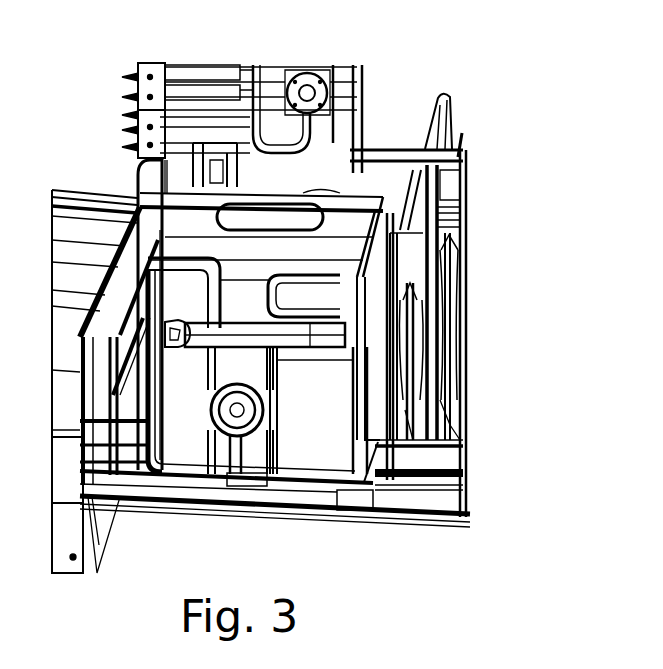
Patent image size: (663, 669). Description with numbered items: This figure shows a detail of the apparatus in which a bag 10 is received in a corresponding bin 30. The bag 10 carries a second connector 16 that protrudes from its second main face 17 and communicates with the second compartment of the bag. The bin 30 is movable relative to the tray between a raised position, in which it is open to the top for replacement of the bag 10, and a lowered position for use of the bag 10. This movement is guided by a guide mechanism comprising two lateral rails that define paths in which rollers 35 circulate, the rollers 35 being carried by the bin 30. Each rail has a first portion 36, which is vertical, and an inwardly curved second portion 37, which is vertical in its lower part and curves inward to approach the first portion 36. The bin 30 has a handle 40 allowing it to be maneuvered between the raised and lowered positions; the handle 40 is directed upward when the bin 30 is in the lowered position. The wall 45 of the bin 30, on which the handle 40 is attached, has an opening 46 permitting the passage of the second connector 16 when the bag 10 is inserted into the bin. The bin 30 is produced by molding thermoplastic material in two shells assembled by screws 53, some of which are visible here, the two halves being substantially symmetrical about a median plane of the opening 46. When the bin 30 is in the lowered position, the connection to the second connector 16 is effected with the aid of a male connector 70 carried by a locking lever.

The bag 10 is at (138, 203).
The second connector 16 is at (200, 450).
The second main face 17 is at (208, 387).
The bin 30 is at (352, 472).
The rollers 35 is at (467, 380).
The first portion 36 is at (465, 442).
The second portion 37 is at (465, 308).
The handle 40 is at (290, 355).
The wall 45 is at (298, 450).
The opening 46 is at (283, 291).
The screws 53 is at (234, 482).
The male connector 70 is at (305, 75).